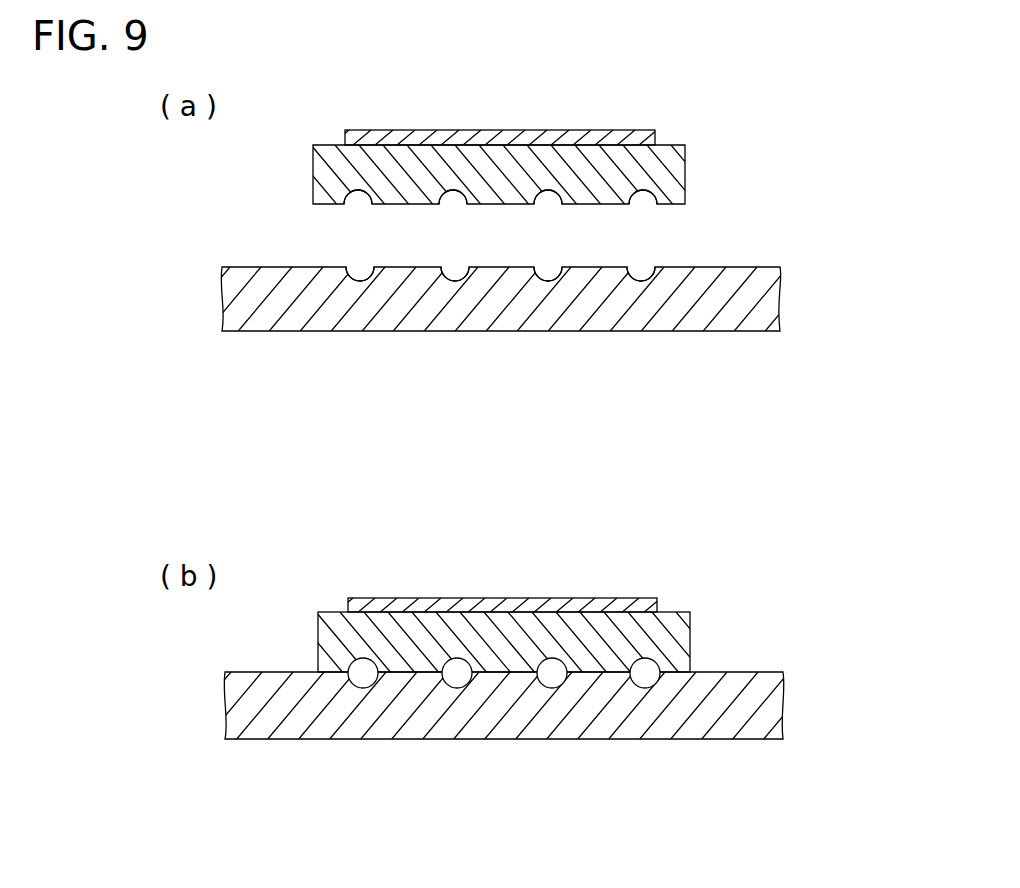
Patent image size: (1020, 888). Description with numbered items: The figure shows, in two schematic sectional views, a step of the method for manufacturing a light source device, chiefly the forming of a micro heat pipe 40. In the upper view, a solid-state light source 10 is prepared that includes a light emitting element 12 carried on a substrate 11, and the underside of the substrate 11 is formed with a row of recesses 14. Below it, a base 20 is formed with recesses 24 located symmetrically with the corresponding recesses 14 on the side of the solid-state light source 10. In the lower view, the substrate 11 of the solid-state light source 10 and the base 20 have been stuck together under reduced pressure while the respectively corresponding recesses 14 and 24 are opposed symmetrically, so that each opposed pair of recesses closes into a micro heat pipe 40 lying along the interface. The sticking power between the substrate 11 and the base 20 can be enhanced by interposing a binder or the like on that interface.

The solid-state light source 10 is at (532, 392).
The substrate 11 is at (506, 408).
The light emitting element 12 is at (655, 138).
The recesses 14 is at (359, 194).
The base 20 is at (778, 293).
The recesses 24 is at (359, 268).
The micro heat pipe 40 is at (363, 682).